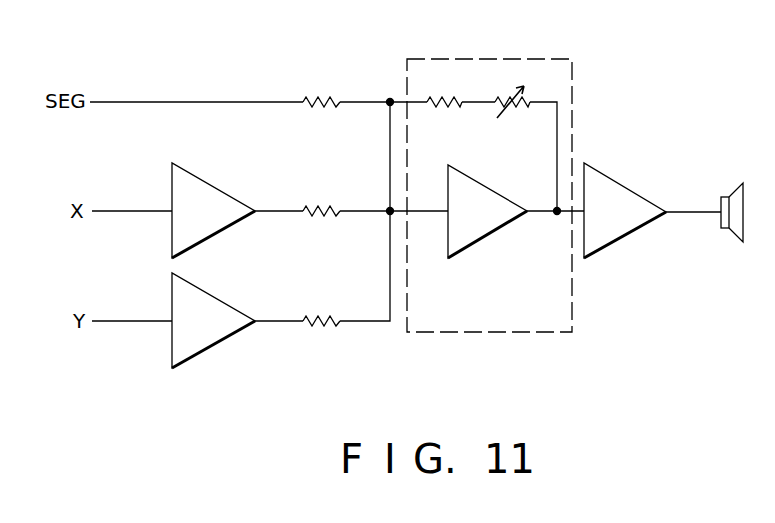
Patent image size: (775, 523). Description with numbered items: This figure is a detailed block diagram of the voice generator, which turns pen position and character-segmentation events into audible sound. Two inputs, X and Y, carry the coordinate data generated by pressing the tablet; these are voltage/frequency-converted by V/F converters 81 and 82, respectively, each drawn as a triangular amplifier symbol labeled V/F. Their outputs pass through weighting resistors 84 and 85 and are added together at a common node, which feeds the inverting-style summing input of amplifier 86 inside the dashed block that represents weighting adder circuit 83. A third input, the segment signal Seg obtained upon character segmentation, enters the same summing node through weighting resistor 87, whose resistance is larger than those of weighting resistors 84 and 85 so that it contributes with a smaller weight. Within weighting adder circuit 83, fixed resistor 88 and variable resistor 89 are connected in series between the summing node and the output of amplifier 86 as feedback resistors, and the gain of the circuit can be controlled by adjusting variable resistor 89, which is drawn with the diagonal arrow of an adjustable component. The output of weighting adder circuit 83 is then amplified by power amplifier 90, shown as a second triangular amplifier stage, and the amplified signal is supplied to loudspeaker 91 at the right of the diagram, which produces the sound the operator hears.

The V/F converter 81 is at (232, 192).
The V/F converter 82 is at (232, 302).
The weighting adder circuit 83 is at (530, 58).
The weighting resistor 84 is at (321, 208).
The weighting resistor 85 is at (321, 314).
The amplifier 86 is at (489, 237).
The weighting resistor 87 is at (325, 100).
The fixed resistor 88 is at (452, 106).
The variable resistor 89 is at (521, 106).
The power amplifier 90 is at (636, 197).
The loudspeaker 91 is at (733, 191).